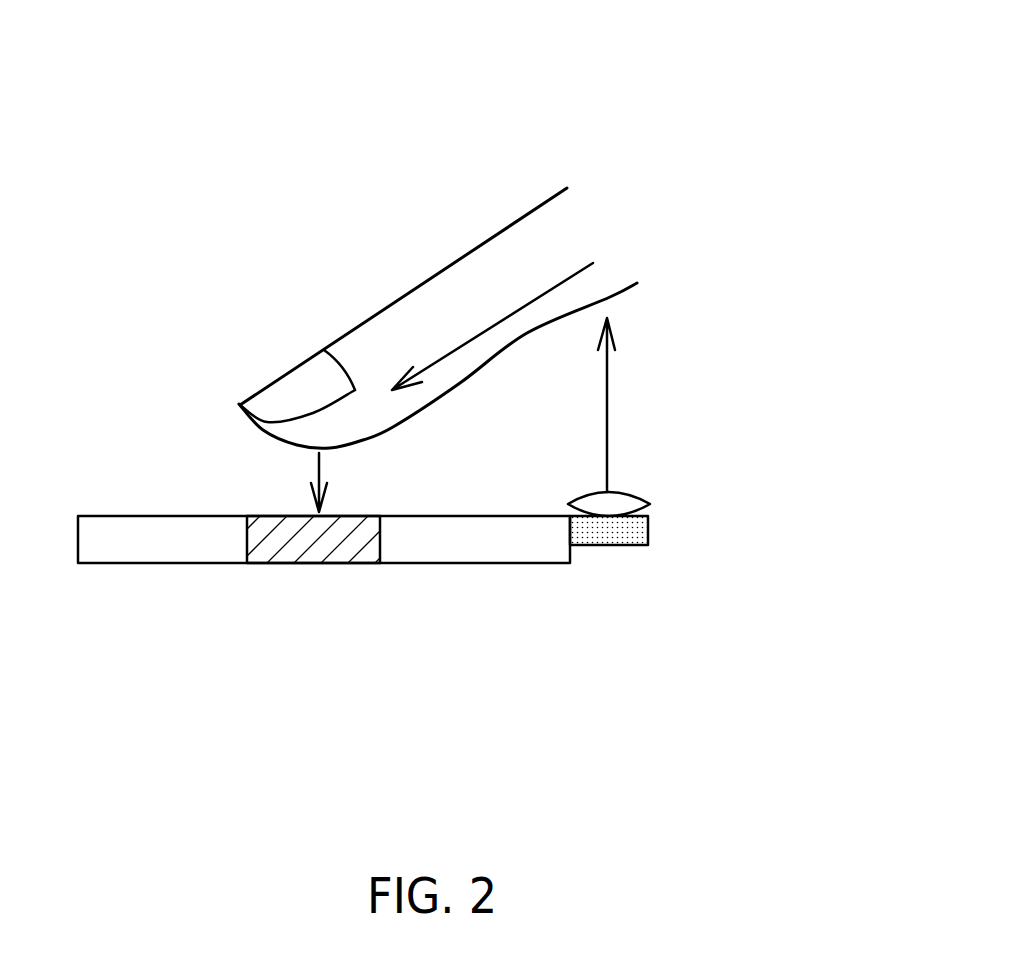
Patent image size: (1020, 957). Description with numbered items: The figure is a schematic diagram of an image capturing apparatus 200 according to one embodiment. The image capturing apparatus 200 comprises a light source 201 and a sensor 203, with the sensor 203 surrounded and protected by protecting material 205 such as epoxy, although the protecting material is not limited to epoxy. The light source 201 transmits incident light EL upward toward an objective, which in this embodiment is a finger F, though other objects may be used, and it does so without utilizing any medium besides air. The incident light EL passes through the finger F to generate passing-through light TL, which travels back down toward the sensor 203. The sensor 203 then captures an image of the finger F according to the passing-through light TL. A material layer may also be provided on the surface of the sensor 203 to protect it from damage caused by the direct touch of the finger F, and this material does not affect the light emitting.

The image capturing apparatus 200 is at (442, 348).
The light source 201 is at (608, 545).
The sensor 203 is at (312, 563).
The protecting material 205 is at (474, 563).
The finger F is at (403, 310).
The passing-through light TL is at (344, 482).
The incident light EL is at (624, 405).